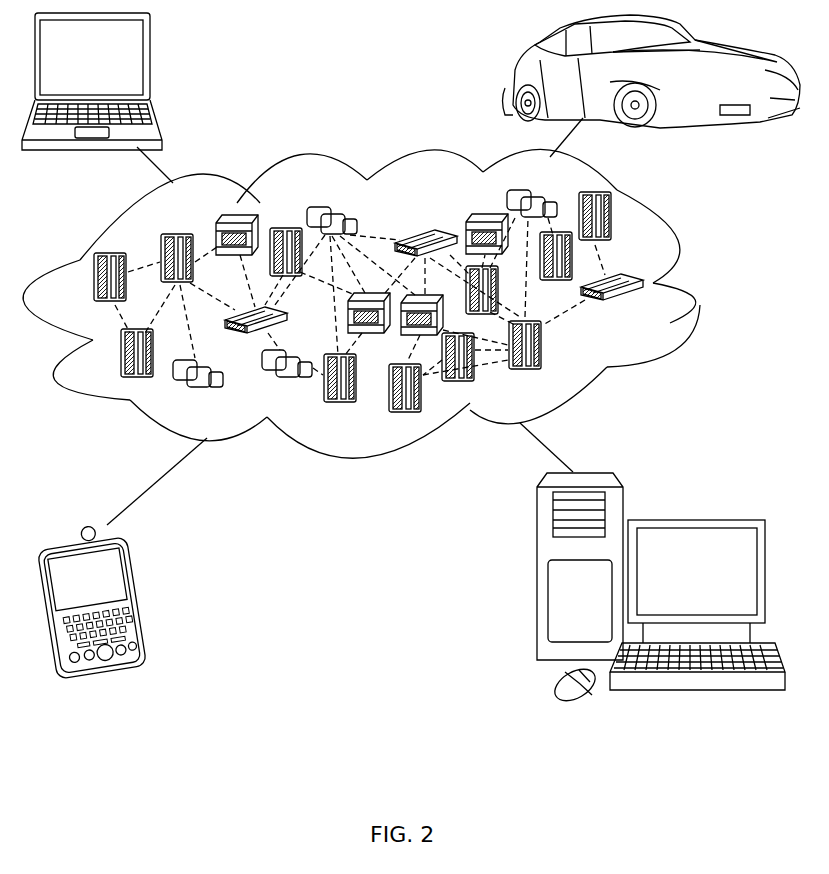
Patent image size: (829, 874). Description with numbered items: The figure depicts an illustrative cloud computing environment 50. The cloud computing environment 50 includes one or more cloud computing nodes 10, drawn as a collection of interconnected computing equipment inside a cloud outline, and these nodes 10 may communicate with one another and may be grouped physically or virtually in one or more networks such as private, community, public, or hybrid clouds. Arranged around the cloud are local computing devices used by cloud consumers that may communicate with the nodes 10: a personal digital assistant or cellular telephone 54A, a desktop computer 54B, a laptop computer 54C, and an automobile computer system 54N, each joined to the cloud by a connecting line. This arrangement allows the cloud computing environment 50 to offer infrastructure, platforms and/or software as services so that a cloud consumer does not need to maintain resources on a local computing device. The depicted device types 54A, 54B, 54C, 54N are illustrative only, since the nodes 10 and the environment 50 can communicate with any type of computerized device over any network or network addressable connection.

The cloud computing environment 50 is at (697, 285).
The cloud computing nodes 10 is at (645, 310).
The personal digital assistant (PDA) or cellular telephone 54A is at (143, 594).
The desktop computer 54B is at (694, 519).
The laptop computer 54C is at (150, 62).
The automobile computer system 54N is at (515, 78).